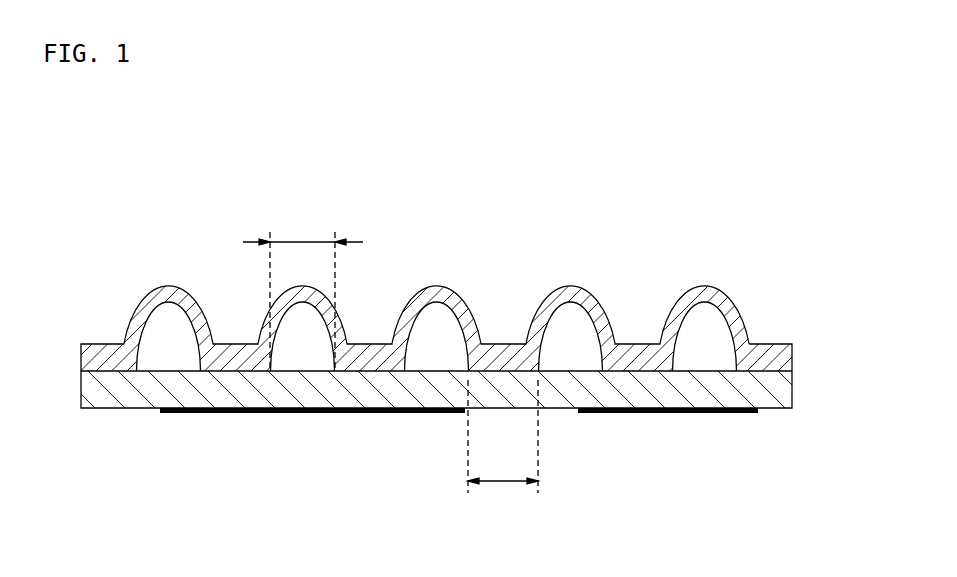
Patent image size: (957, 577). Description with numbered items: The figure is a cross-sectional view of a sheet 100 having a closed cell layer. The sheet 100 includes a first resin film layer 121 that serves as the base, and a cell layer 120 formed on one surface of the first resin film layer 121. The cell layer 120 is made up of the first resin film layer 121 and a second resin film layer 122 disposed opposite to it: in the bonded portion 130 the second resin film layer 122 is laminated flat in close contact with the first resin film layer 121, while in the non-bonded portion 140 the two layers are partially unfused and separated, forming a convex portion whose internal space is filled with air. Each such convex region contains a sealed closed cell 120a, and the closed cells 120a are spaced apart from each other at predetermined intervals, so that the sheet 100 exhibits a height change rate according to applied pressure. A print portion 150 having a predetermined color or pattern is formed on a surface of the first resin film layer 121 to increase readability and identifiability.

The sheet having a closed cell layer 100 is at (470, 203).
The cell layer 120 is at (710, 285).
The closed cell 120a is at (167, 332).
The first resin film layer 121 is at (778, 395).
The second resin film layer 122 is at (768, 352).
The bonded portion 130 is at (503, 436).
The non-bonded portion 140 is at (303, 292).
The print portion 150 is at (223, 414).